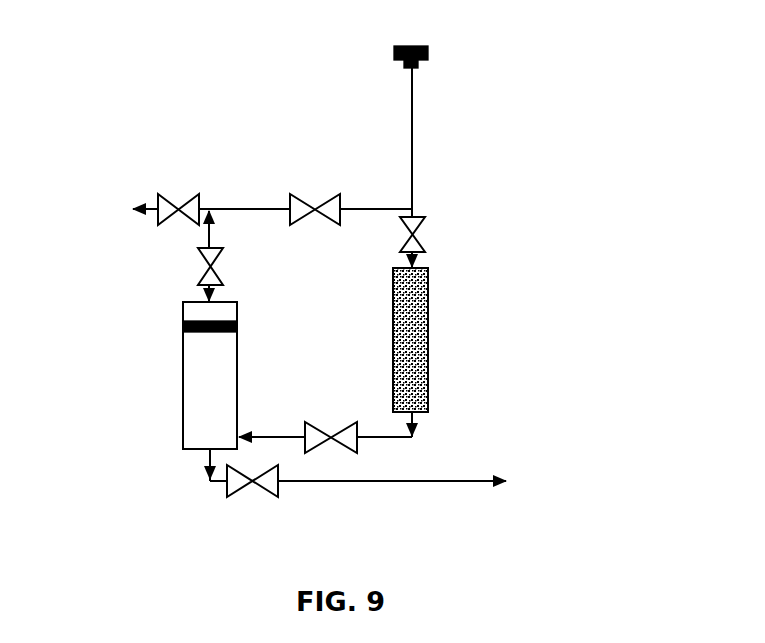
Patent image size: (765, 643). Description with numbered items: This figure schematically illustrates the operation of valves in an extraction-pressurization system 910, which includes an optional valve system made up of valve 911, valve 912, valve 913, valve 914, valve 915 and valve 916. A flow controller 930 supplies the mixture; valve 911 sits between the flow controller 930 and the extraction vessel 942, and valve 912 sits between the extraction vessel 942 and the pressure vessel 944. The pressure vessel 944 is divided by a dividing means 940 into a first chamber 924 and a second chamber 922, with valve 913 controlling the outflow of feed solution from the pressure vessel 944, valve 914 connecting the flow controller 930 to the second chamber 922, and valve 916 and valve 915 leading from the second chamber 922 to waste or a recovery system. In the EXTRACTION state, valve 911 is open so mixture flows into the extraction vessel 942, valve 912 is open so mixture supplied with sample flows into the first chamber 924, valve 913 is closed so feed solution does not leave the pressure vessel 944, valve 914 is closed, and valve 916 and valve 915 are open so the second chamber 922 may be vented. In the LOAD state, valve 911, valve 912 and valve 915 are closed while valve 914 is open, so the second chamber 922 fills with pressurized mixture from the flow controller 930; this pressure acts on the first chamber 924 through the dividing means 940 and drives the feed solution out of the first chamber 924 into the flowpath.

The extraction-pressurization system 910 is at (509, 90).
The valve 911 is at (437, 228).
The valve 912 is at (323, 420).
The valve 913 is at (238, 511).
The valve 914 is at (318, 180).
The valve 915 is at (182, 193).
The valve 916 is at (196, 255).
The second chamber 922 is at (182, 308).
The first chamber 924 is at (182, 396).
The flow controller 930 is at (421, 42).
The dividing means 940 is at (239, 327).
The extraction vessel 942 is at (450, 376).
The pressure vessel 944 is at (129, 397).